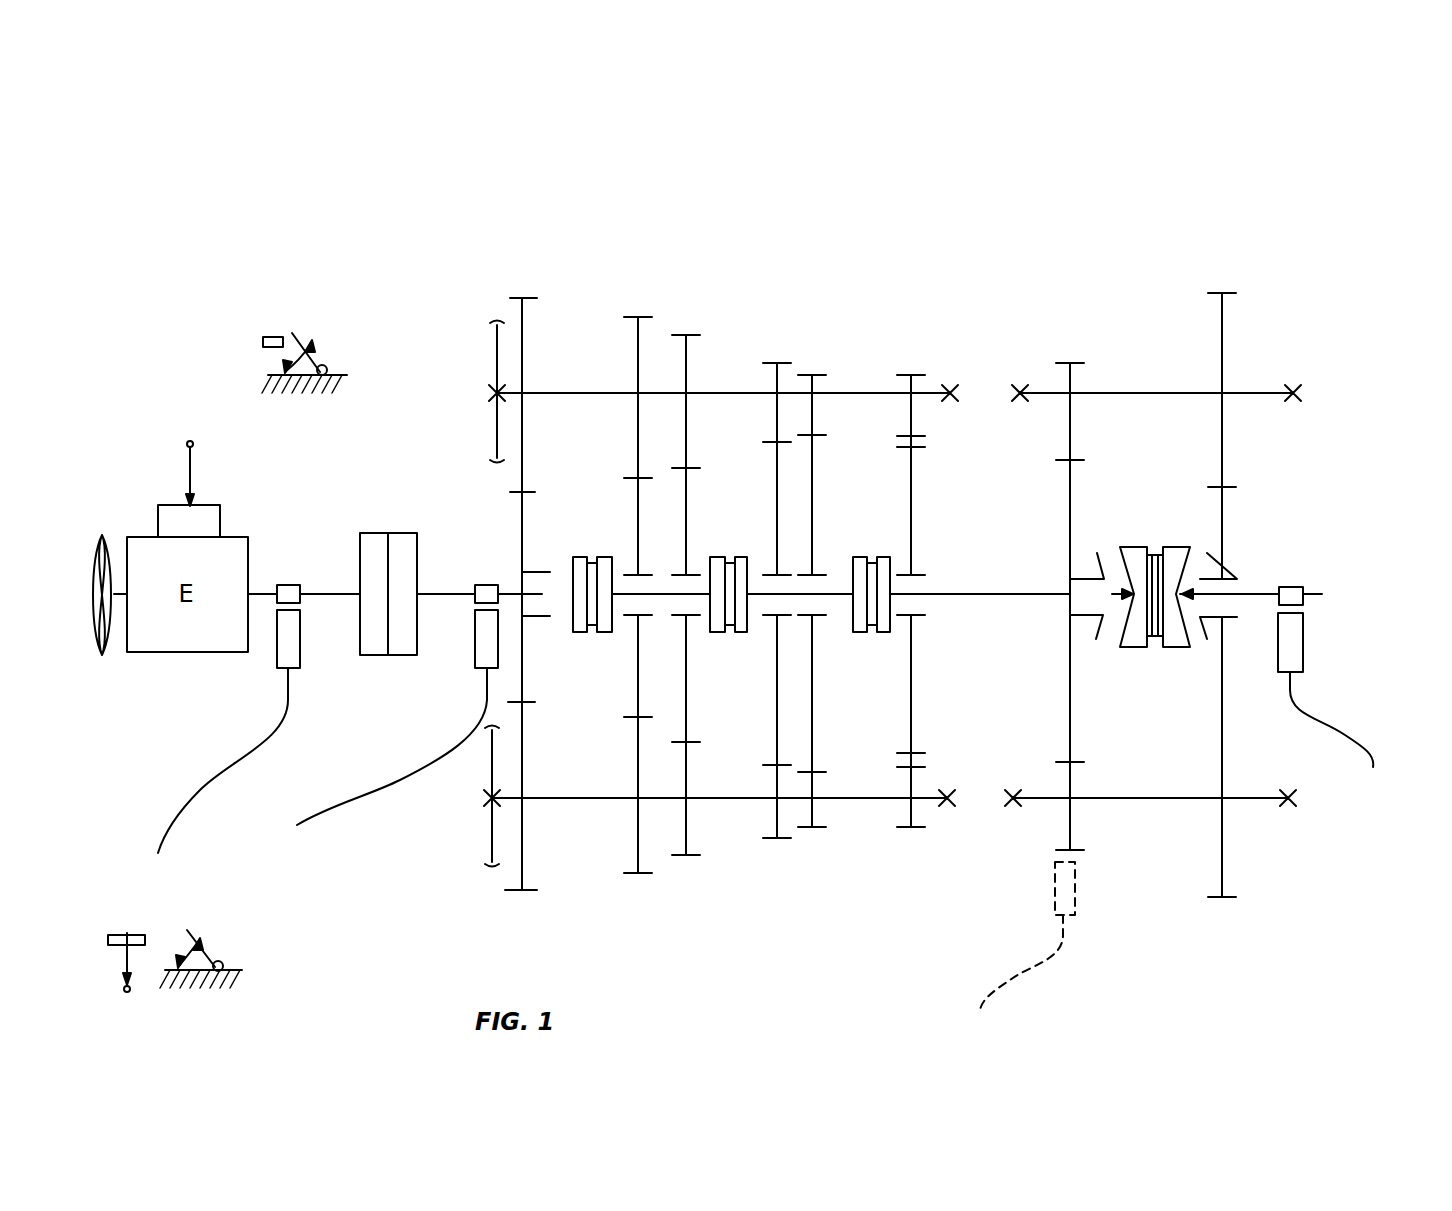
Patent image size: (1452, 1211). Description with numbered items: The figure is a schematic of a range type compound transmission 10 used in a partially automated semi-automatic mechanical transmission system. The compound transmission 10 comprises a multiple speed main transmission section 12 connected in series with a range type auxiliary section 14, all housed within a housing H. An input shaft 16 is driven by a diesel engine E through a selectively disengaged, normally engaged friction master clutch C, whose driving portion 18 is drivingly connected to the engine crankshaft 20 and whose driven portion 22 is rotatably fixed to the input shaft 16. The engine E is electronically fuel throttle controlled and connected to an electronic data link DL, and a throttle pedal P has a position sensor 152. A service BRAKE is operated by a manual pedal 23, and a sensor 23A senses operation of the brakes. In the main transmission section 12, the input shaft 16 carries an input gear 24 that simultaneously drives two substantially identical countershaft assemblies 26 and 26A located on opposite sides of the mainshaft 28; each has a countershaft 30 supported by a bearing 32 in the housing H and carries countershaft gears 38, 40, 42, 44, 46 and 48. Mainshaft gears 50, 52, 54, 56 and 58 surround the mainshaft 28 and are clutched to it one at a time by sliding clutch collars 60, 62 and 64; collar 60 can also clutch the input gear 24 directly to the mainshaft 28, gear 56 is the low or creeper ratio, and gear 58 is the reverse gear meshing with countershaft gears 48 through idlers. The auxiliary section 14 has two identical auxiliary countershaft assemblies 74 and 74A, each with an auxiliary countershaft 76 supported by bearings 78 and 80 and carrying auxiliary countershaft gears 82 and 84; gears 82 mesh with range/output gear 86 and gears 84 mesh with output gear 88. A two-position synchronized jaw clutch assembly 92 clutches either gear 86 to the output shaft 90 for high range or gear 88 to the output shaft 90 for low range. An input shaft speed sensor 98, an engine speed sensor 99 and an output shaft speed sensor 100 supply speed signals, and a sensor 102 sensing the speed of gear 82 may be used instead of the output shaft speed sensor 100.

The compound transmission 10 is at (959, 326).
The main transmission section 12 is at (720, 358).
The auxiliary range section 14 is at (1145, 271).
The input shaft 16 is at (435, 585).
The driving portion 18 is at (373, 653).
The engine crankshaft 20 is at (330, 590).
The driven portion 22 is at (403, 650).
The manual pedal 23 is at (208, 950).
The sensor 23A is at (127, 933).
The input gear 24 is at (525, 508).
The countershaft assembly 26 is at (578, 392).
The countershaft assembly 26A is at (605, 802).
The mainshaft 28 is at (1010, 600).
The countershaft 30 is at (615, 395).
The bearing 32 is at (475, 812).
The countershaft gear 38 is at (522, 847).
The countershaft gear 40 is at (635, 837).
The countershaft gear 42 is at (686, 827).
The countershaft gear 44 is at (777, 818).
The countershaft gear 46 is at (812, 815).
The countershaft gear 48 is at (911, 817).
The mainshaft gear 50 is at (635, 692).
The mainshaft gear 52 is at (686, 697).
The mainshaft gear 54 is at (777, 713).
The mainshaft drive gear 56 is at (812, 681).
The mainshaft gear 58 is at (911, 695).
The sliding clutch collar 60 is at (573, 613).
The sliding clutch collar 62 is at (702, 570).
The sliding clutch collar 64 is at (853, 570).
The auxiliary countershaft assembly 74 is at (1115, 389).
The auxiliary countershaft assembly 74A is at (1170, 804).
The auxiliary countershaft 76 is at (1190, 397).
The bearing 78 is at (1023, 400).
The bearing 80 is at (1293, 385).
The auxiliary section countershaft gear 82 is at (1073, 378).
The auxiliary section countershaft gear 84 is at (1225, 340).
The range/output gear 86 is at (1068, 535).
The output gear 88 is at (1218, 518).
The output shaft 90 is at (1253, 593).
The synchronized jaw clutch assembly 92 is at (1132, 653).
The input shaft speed sensor 98 is at (470, 650).
The engine speed sensor 99 is at (275, 645).
The output shaft speed sensor 100 is at (1303, 640).
The sensor 102 is at (1052, 890).
The throttle pedal position sensor 152 is at (272, 335).
The master clutch C is at (391, 530).
The throttle pedal P is at (315, 353).
The housing H is at (495, 358).
The electronic data link DL is at (188, 466).
The service brake BRAKE is at (222, 926).